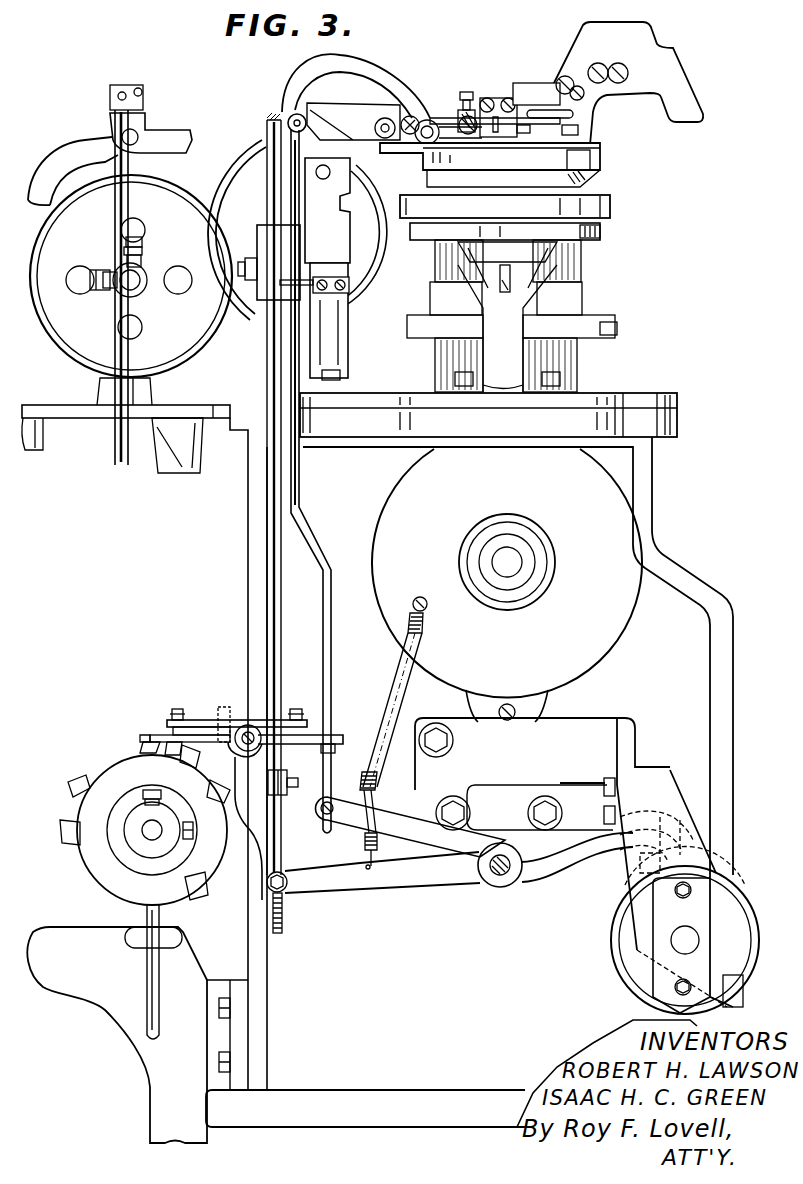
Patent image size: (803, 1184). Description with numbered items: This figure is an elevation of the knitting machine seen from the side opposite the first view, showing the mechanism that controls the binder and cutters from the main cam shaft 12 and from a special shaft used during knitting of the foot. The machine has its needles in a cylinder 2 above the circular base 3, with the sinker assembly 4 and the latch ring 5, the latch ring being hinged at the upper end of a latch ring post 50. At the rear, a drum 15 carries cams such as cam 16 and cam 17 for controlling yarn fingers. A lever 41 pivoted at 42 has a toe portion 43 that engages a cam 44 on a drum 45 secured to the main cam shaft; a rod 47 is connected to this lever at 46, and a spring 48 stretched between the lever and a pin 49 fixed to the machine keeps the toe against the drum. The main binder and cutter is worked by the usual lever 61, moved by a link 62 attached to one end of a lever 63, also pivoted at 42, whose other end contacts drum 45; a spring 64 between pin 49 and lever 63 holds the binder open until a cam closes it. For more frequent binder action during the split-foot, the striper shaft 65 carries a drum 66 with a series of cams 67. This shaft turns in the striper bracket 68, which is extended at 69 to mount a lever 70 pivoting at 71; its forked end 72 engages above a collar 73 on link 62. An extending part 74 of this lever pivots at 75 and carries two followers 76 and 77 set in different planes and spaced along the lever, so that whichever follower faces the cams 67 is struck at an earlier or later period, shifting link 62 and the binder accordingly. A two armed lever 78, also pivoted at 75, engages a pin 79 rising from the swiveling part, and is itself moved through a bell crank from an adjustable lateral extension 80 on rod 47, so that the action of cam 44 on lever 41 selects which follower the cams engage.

The cylinder 2 is at (577, 363).
The circular base 3 is at (662, 420).
The sinker assembly 4 is at (606, 205).
The latch ring 5 is at (490, 165).
The main cam shaft 12 is at (686, 931).
The drum 15 is at (358, 254).
The cam 16 is at (237, 163).
The cam 17 is at (253, 312).
The lever 41 is at (459, 863).
The pivot 42 is at (500, 880).
The toe portion 43 is at (680, 822).
The cam 44 is at (713, 864).
The drum 45 is at (622, 973).
The connection 46 is at (281, 874).
The rod 47 is at (279, 646).
The spring 48 is at (364, 846).
The pin 49 is at (421, 598).
The latch ring post 50 is at (340, 338).
The lever 61 is at (396, 108).
The link 62 is at (300, 522).
The lever 63 is at (404, 820).
The spring 64 is at (382, 706).
The striper shaft 65 is at (150, 832).
The drum 66 is at (124, 800).
The cam 67 is at (76, 786).
The striper bracket 68 is at (150, 982).
The extension 69 is at (246, 828).
The lever 70 is at (200, 723).
The pivot 71 is at (236, 752).
The forked end 72 is at (334, 737).
The collar 73 is at (333, 754).
The extending part 74 is at (160, 754).
The pivot 75 is at (222, 714).
The follower 76 is at (165, 735).
The follower 77 is at (141, 740).
The two armed lever 78 is at (286, 720).
The pin 79 is at (179, 709).
The lateral extension 80 is at (279, 788).